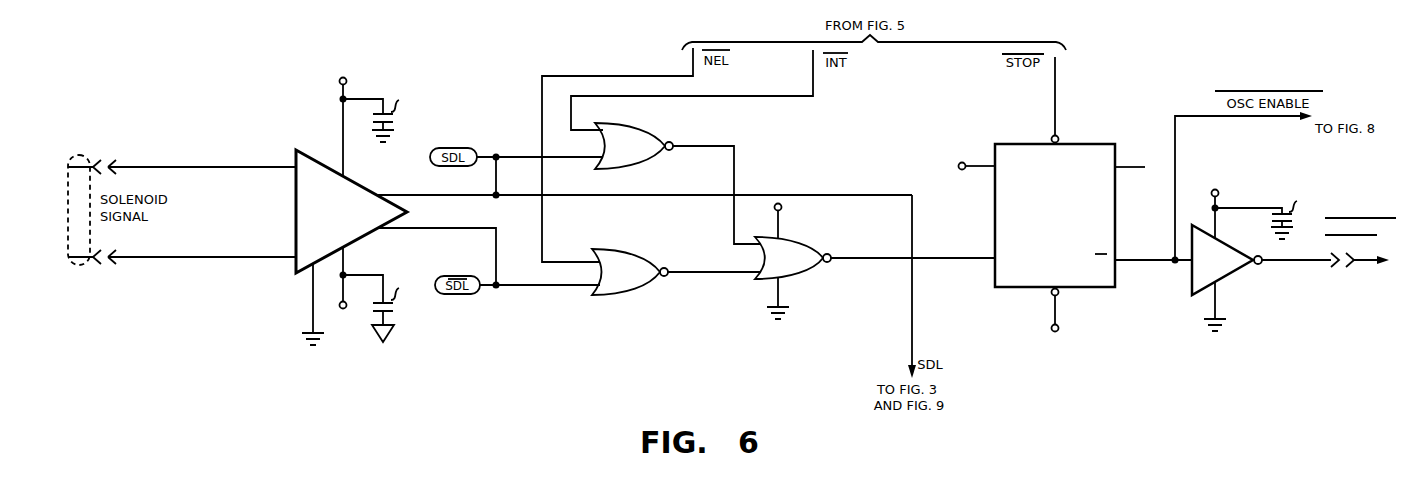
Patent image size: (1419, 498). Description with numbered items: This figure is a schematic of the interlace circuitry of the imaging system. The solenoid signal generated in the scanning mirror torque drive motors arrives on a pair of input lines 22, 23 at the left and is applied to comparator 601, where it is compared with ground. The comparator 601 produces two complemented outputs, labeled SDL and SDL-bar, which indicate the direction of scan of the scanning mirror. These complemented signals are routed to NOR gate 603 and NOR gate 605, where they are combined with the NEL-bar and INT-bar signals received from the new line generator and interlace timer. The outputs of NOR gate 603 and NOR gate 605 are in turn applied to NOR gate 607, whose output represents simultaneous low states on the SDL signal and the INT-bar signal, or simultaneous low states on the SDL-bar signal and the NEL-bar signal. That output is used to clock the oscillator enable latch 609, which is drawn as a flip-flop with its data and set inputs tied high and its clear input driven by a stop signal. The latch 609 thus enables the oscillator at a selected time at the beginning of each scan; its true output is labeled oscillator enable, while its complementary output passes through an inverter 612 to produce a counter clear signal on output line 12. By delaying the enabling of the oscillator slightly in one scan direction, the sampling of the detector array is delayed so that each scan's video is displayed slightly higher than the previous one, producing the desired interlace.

The solenoid signal input line 22 is at (182, 158).
The solenoid signal input line 23 is at (182, 246).
The comparator 601 is at (363, 183).
The NOR gate 603 is at (640, 124).
The NOR gate 605 is at (648, 250).
The NOR gate 607 is at (810, 240).
The oscillator enable latch 609 is at (1078, 142).
The inverter 612 is at (1228, 276).
The counter clear line 12 is at (1360, 257).